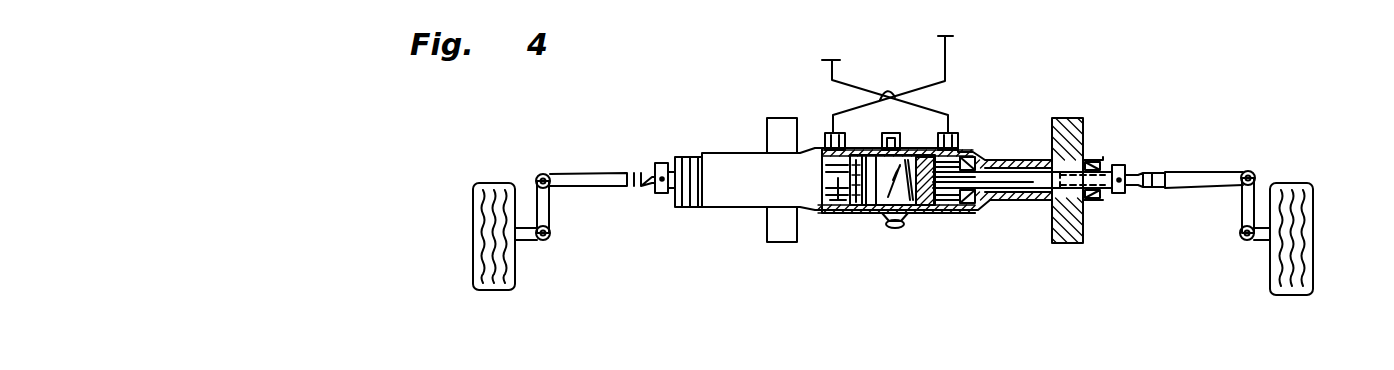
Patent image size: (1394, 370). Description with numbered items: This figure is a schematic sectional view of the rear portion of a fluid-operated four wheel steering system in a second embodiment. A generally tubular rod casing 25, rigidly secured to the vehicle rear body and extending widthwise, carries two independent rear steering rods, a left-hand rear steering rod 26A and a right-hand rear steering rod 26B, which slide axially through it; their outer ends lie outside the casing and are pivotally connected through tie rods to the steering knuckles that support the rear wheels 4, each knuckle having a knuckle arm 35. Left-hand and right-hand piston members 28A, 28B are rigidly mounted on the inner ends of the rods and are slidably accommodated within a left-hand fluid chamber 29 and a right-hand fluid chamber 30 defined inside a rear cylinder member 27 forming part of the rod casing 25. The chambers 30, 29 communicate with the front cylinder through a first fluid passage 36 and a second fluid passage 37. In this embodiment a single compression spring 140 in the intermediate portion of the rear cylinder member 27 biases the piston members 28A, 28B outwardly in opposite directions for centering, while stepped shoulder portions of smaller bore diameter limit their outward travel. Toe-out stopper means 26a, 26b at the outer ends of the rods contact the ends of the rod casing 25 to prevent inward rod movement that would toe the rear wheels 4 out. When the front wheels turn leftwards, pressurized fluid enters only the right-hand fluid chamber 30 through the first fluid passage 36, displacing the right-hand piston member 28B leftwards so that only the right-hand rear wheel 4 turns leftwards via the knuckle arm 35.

The rear wheel 4 is at (472, 245).
The knuckle arm 35 is at (550, 222).
The toe-out stopper means 26a is at (663, 163).
The toe-out stopper means 26b is at (1122, 163).
The left-hand rear steering rod 26A is at (830, 212).
The right-hand rear steering rod 26B is at (1015, 190).
The left-hand piston member 28A is at (858, 213).
The right-hand piston member 28B is at (925, 213).
The compression spring 140 is at (913, 213).
The rear cylinder member 27 is at (955, 207).
The rod casing 25 is at (1020, 158).
The left-hand fluid chamber 29 is at (822, 140).
The right-hand fluid chamber 30 is at (975, 150).
The first fluid passage 36 is at (828, 70).
The second fluid passage 37 is at (947, 58).